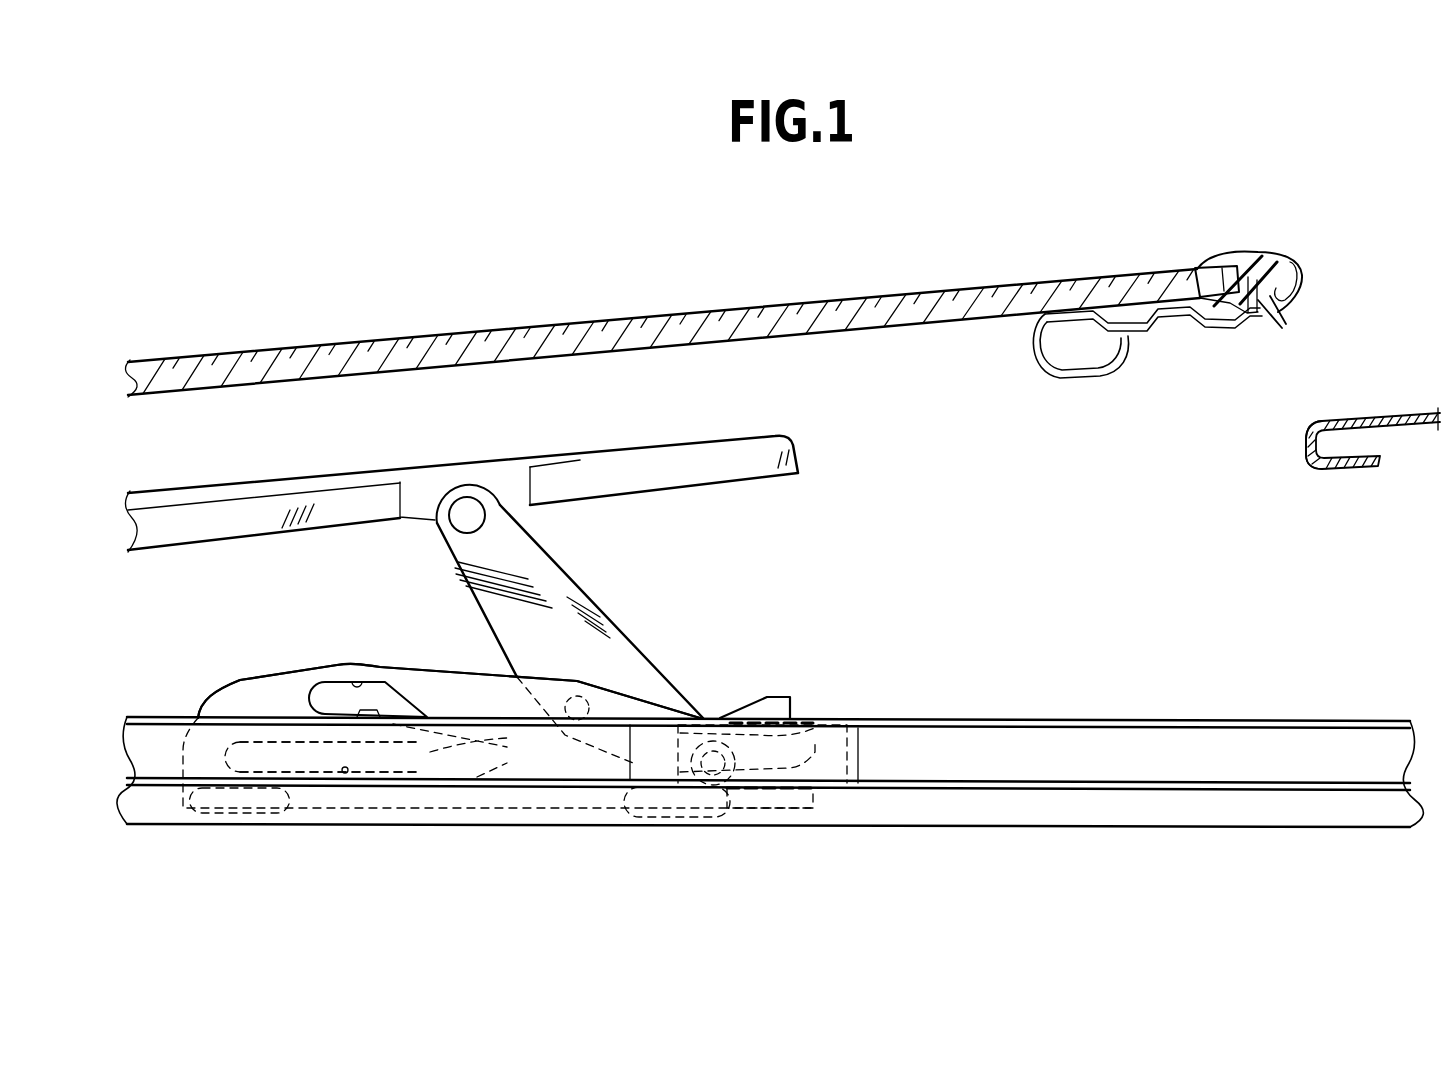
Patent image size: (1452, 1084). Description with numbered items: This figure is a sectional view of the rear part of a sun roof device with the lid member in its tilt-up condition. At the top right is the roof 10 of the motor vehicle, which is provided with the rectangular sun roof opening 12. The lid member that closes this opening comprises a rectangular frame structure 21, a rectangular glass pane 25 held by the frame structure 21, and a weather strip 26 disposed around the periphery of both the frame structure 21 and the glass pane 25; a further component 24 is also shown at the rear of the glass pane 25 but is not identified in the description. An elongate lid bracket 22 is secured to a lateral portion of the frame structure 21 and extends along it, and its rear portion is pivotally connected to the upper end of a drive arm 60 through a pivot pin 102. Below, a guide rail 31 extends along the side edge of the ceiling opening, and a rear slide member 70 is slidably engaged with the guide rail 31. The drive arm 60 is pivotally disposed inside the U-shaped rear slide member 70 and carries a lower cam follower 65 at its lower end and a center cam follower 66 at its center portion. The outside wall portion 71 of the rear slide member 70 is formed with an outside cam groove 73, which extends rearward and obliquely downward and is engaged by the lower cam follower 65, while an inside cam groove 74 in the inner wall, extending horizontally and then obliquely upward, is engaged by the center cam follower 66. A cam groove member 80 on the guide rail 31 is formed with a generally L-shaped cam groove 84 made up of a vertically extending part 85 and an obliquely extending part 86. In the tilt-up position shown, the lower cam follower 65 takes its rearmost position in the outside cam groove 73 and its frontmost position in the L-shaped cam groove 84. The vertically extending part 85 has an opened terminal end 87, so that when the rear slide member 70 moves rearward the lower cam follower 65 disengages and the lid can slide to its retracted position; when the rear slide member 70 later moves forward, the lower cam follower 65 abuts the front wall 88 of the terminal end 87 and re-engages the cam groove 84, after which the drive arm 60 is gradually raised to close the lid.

The roof 10 is at (1378, 412).
The sun roof opening 12 is at (1308, 455).
The rectangular frame structure 21 is at (1085, 378).
The elongate lid bracket 22 is at (665, 457).
The retainer 24 is at (1163, 270).
The rectangular glass pane 25 is at (718, 316).
The weather strip 26 is at (1240, 262).
The guide rail 31 is at (1088, 808).
The drive arm 60 is at (557, 603).
The lower cam follower 65 is at (710, 770).
The center cam follower 66 is at (580, 707).
The rear slide member 70 is at (264, 688).
The outside wall portion 71 is at (298, 673).
The outside cam groove 73 is at (364, 683).
The inside cam groove 74 is at (345, 773).
The cam groove member 80 is at (767, 696).
The L-shaped cam groove 84 is at (810, 712).
The vertically extending part 85 is at (823, 735).
The obliquely extending part 86 is at (788, 752).
The terminal end 87 is at (847, 722).
The front wall 88 is at (810, 718).
The pivot pin 102 is at (467, 508).